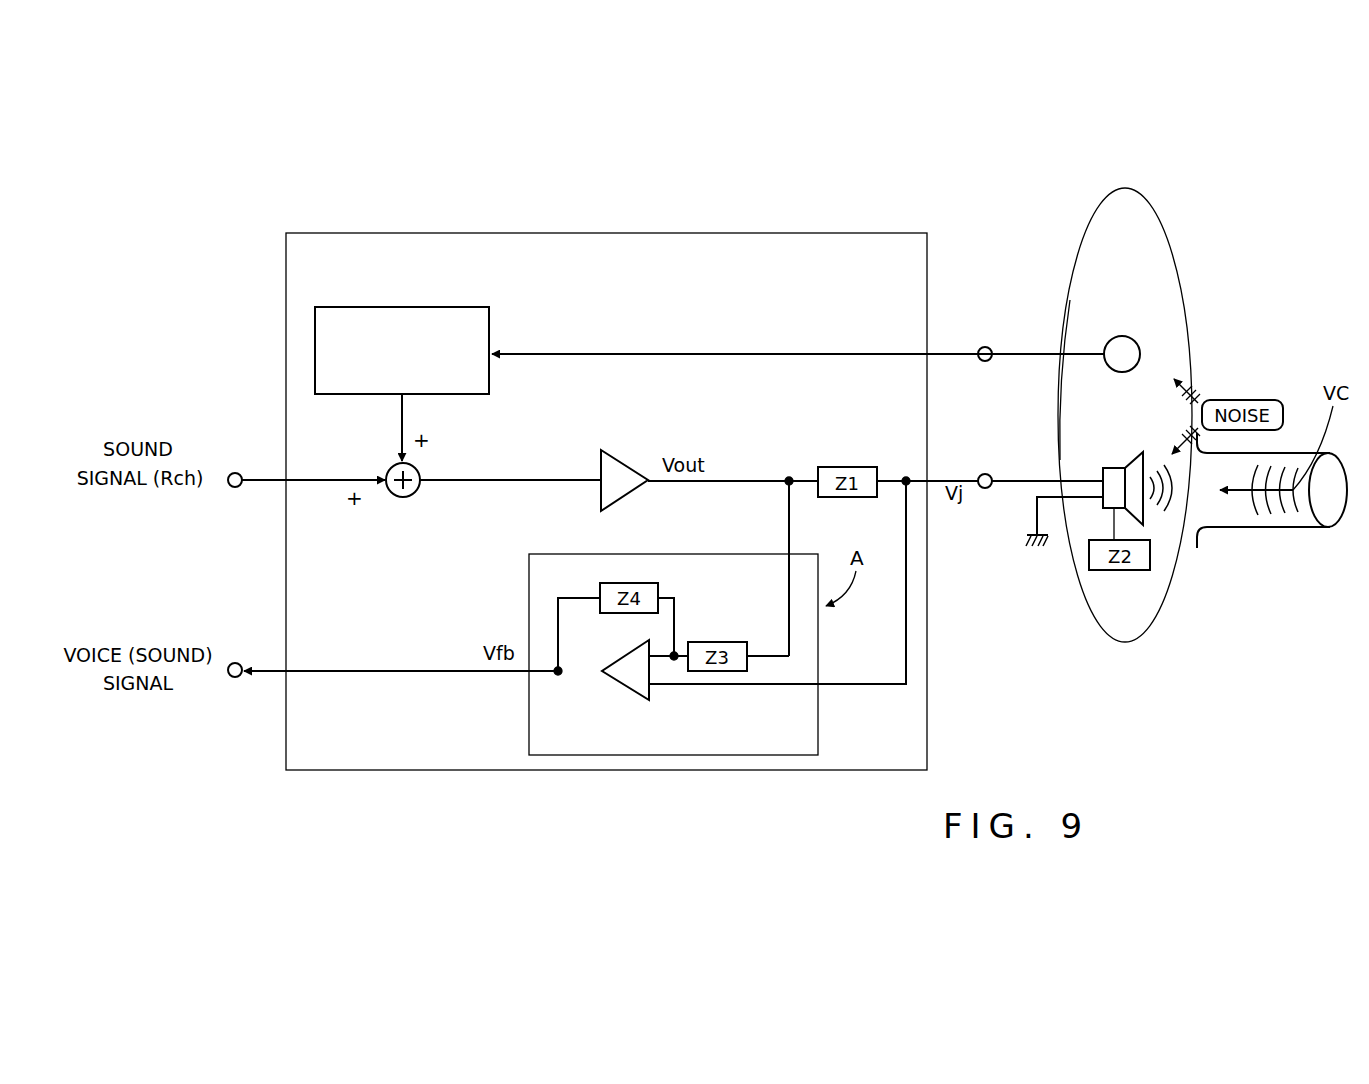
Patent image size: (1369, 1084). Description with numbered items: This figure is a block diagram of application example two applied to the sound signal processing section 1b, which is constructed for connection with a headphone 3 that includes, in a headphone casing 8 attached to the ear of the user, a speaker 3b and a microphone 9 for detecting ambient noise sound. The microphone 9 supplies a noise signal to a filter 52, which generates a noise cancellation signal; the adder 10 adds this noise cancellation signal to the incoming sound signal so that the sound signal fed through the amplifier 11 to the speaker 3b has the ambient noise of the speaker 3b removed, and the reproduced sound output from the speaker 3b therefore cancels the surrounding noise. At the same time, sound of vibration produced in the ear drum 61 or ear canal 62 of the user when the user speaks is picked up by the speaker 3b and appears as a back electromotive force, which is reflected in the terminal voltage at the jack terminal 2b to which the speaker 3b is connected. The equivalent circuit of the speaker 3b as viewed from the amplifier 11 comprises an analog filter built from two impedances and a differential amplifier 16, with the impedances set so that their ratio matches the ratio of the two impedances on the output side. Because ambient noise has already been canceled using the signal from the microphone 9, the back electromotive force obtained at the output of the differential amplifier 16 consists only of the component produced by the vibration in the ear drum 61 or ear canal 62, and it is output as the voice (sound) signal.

The sound signal processing section 1b is at (366, 232).
The filter 52 is at (452, 307).
The adder 10 is at (391, 462).
The amplifier 11 is at (604, 462).
The differential amplifier 16 is at (624, 687).
The jack terminal 2b is at (986, 474).
The headphone 3 is at (1194, 250).
The headphone casing 8 is at (1078, 246).
The microphone 9 is at (1137, 336).
The speaker 3b is at (1133, 452).
The ear canal 62 is at (1283, 523).
The ear drum 61 is at (1320, 510).